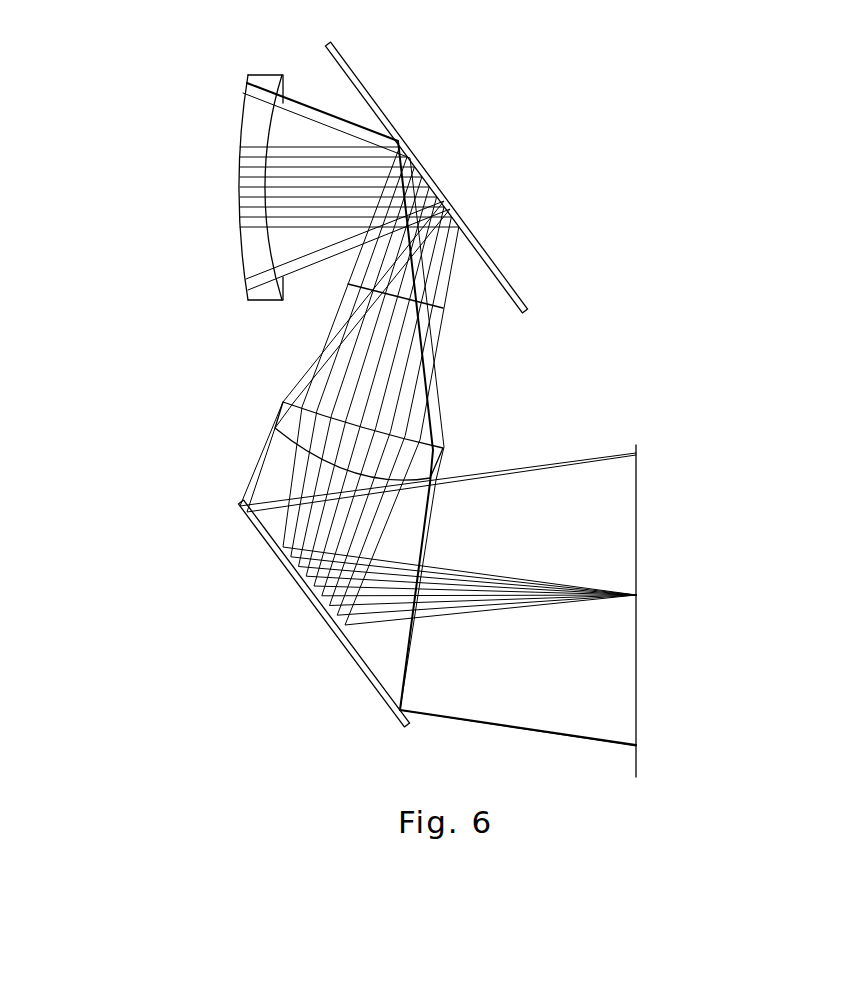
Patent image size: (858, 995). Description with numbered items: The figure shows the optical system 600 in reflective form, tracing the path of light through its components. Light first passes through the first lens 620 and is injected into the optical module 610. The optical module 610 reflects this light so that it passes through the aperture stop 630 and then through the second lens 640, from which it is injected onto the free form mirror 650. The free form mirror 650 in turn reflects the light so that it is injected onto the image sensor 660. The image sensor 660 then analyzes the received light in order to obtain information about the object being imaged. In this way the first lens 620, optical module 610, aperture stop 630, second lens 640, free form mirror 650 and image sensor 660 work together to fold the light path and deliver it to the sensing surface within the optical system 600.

The optical system 600 is at (805, 113).
The optical module 610 is at (498, 263).
The first lens 620 is at (252, 257).
The aperture stop 630 is at (432, 313).
The second lens 640 is at (275, 423).
The free form mirror 650 is at (293, 585).
The image sensor 660 is at (636, 663).